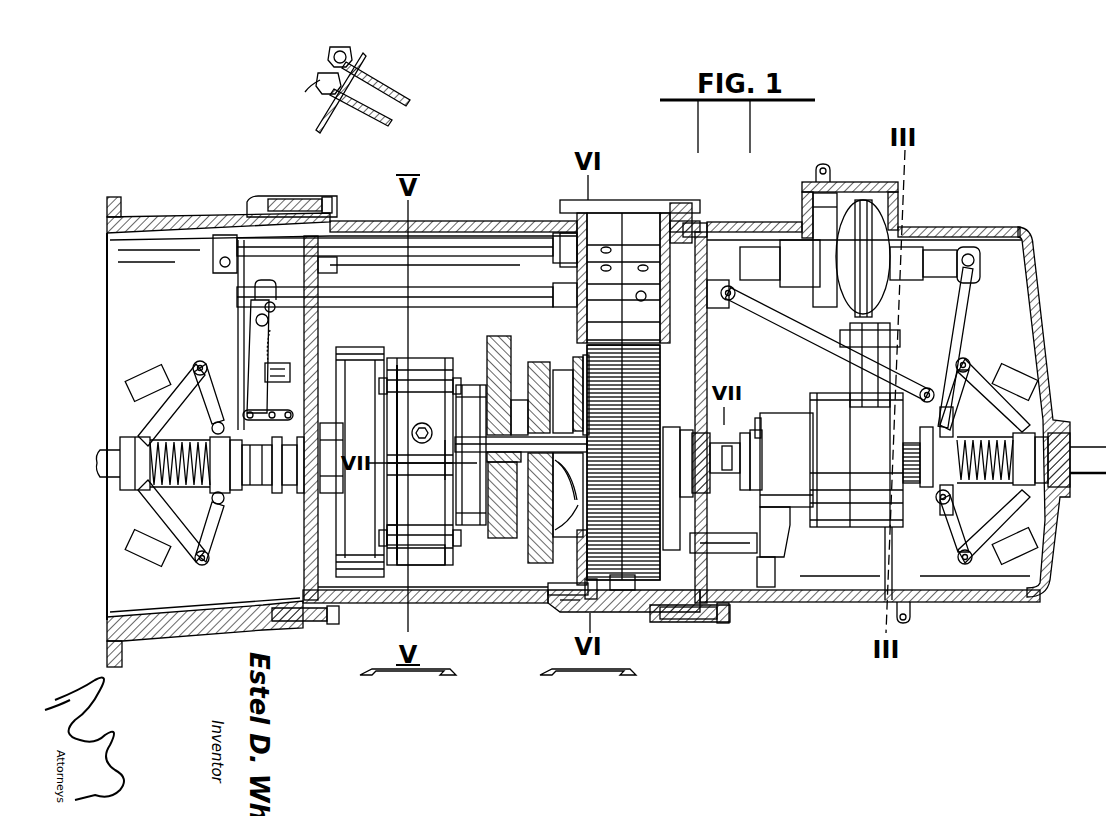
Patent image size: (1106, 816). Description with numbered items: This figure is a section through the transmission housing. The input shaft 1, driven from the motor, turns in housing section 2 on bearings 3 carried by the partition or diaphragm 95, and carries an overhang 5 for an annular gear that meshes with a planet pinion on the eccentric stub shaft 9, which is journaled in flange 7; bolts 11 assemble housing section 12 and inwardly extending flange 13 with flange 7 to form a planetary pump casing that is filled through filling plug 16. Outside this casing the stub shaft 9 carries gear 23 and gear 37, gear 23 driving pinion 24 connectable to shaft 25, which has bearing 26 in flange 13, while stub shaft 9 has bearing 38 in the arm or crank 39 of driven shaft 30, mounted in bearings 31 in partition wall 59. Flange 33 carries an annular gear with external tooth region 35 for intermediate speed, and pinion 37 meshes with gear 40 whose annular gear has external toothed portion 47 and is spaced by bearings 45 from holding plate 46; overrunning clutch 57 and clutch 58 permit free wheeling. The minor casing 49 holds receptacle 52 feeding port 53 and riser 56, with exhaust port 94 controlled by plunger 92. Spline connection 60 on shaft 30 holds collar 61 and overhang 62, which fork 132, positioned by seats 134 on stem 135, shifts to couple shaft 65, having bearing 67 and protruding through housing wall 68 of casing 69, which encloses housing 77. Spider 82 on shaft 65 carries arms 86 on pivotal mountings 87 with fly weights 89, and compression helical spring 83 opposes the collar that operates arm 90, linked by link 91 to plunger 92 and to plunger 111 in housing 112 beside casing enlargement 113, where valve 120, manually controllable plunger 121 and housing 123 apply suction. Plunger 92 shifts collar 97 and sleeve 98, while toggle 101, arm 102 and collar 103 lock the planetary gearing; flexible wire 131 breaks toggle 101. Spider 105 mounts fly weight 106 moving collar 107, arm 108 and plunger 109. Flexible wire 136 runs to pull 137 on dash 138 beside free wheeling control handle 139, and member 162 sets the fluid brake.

The shaft 1 is at (100, 450).
The housing section 2 is at (190, 630).
The bearings 3 is at (300, 493).
The overhang 5 is at (370, 572).
The flange 7 is at (405, 358).
The stub shaft 9 is at (470, 390).
The bolts 11 is at (396, 360).
The housing section 12 is at (425, 562).
The inwardly extending flange 13 is at (450, 552).
The filling plug 16 is at (424, 422).
The gear 23 is at (510, 332).
The pinion 24 is at (500, 540).
The shaft 25 is at (462, 486).
The bearing 26 is at (521, 445).
The shaft 30 is at (746, 494).
The bearings 31 is at (710, 492).
The flange 33 is at (672, 551).
The external tooth region 35 is at (650, 575).
The gear 37 is at (538, 363).
The bearing 38 is at (570, 368).
The arm or crank 39 is at (583, 355).
The gear 40 is at (540, 560).
The bearings 45 is at (590, 605).
The holding plate 46 is at (572, 576).
The external toothed portion 47 is at (605, 590).
The minor casing 49 is at (608, 201).
The receptacle 52 is at (660, 340).
The port 53 is at (578, 270).
The riser 56 is at (614, 240).
The overrunning clutch 57 is at (568, 495).
The clutch 58 is at (522, 545).
The partition wall 59 is at (707, 348).
The spline connection 60 is at (730, 443).
The collar 61 is at (762, 428).
The overhang 62 is at (790, 408).
The shaft 65 is at (1080, 447).
The bearing 67 is at (1052, 508).
The housing wall 68 is at (1050, 546).
The casing 69 is at (758, 602).
The housing 77 is at (875, 530).
The spider 82 is at (1000, 428).
The compression helical spring 83 is at (978, 486).
The arms 86 is at (950, 540).
The pivotal mountings 87 is at (985, 384).
The fly weights 89 is at (1030, 378).
The arm 90 is at (955, 322).
The link 91 is at (828, 346).
The plunger 92 is at (382, 292).
The exhaust port 94 is at (636, 296).
The partition or diaphragm 95 is at (318, 325).
The collar 97 is at (300, 495).
The sleeve 98 is at (544, 402).
The toggle 101 is at (277, 405).
The arm 102 is at (250, 337).
The collar 103 is at (252, 492).
The spider 105 is at (158, 512).
The fly weight 106 is at (160, 378).
The collar 107 is at (215, 432).
The arm 108 is at (232, 297).
The plunger 109 is at (248, 262).
The plunger 111 is at (978, 282).
The housing 112 is at (890, 295).
The casing enlargement 113 is at (882, 182).
The valve 120 is at (813, 207).
The manually controllable plunger 121 is at (816, 170).
The housing 123 is at (786, 287).
The flexible wire 131 is at (395, 120).
The fork 132 is at (787, 545).
The seats 134 is at (740, 553).
The stem 135 is at (772, 533).
The flexible wire 136 is at (412, 98).
The pull 137 is at (330, 57).
The dash 138 is at (322, 120).
The free wheeling control handle 139 is at (318, 88).
The member 162 is at (911, 616).